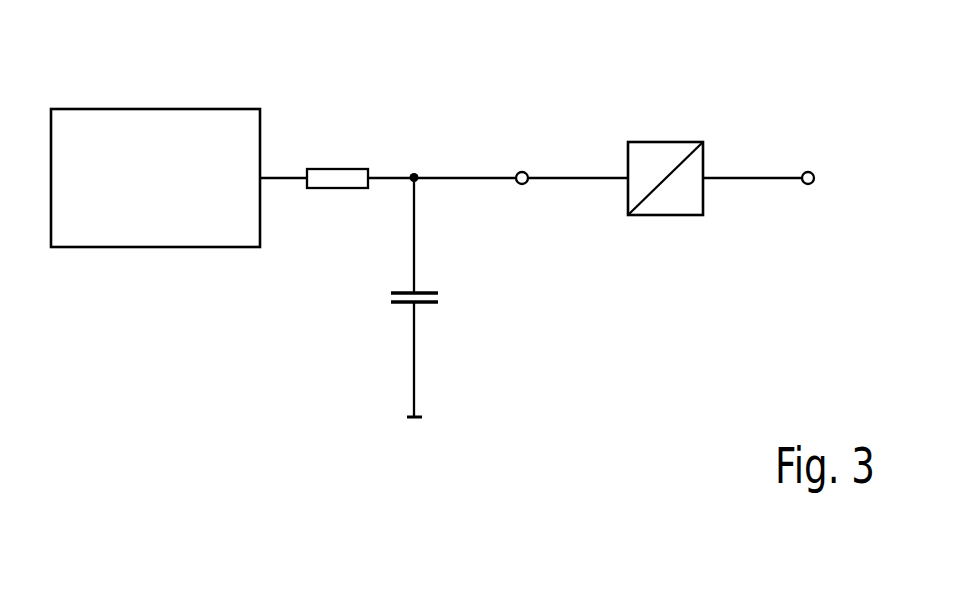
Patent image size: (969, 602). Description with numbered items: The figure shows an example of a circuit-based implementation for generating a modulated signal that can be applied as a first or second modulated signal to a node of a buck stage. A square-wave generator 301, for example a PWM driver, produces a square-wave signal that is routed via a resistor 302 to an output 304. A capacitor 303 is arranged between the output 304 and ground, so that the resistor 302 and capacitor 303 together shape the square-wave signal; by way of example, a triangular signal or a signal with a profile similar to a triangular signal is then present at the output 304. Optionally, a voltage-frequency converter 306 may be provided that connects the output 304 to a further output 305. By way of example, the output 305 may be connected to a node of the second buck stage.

The square-wave generator 301 is at (158, 109).
The resistor 302 is at (340, 169).
The capacitor 303 is at (438, 299).
The output 304 is at (522, 172).
The output 305 is at (808, 172).
The voltage-frequency converter 306 is at (670, 142).